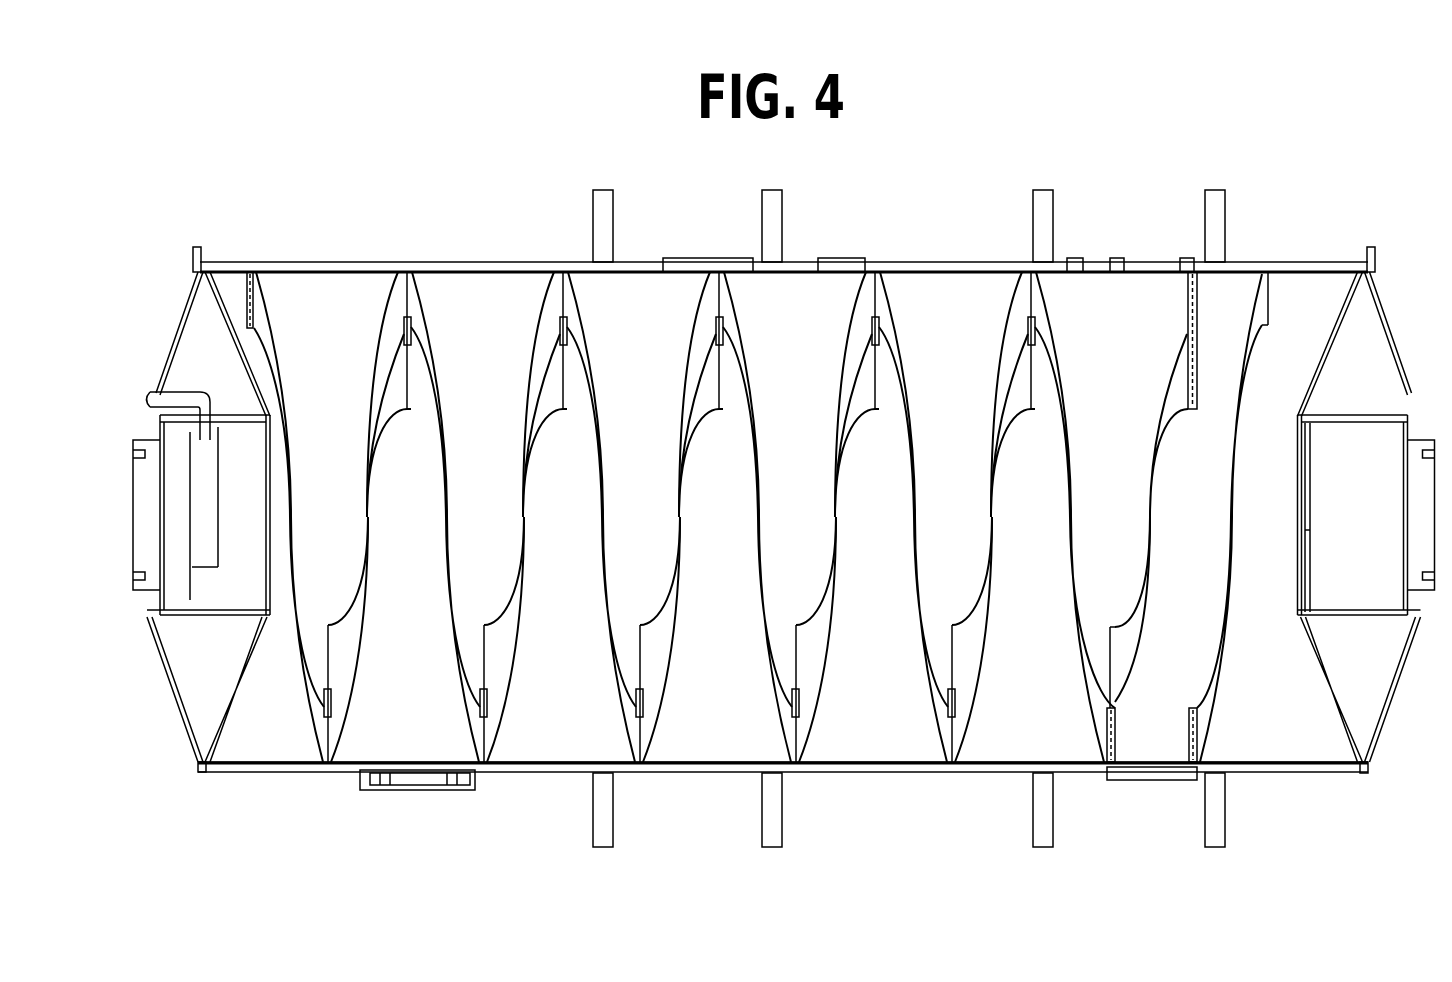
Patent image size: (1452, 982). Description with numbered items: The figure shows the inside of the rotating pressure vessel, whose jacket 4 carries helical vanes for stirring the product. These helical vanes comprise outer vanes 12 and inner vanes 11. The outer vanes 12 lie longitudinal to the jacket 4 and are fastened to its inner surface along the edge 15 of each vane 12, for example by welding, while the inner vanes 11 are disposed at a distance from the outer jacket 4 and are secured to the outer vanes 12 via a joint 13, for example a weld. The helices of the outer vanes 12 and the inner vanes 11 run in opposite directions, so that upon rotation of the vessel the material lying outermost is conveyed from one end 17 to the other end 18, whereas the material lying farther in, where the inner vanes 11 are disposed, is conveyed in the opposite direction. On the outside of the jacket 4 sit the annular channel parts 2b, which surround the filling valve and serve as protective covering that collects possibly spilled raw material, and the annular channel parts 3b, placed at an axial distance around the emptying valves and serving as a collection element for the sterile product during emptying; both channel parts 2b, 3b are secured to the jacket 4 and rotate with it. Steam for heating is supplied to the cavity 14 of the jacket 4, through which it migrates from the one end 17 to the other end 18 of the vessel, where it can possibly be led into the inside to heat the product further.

The annular channel part 2b is at (613, 214).
The annular channel part 3b is at (1053, 214).
The jacket 4 is at (305, 775).
The inner vanes 11 is at (1017, 380).
The outer vanes 12 is at (880, 330).
The joint 13 is at (712, 327).
The cavity 14 is at (545, 782).
The edge 15 is at (398, 275).
The one end 17 is at (263, 205).
The other end 18 is at (1322, 205).